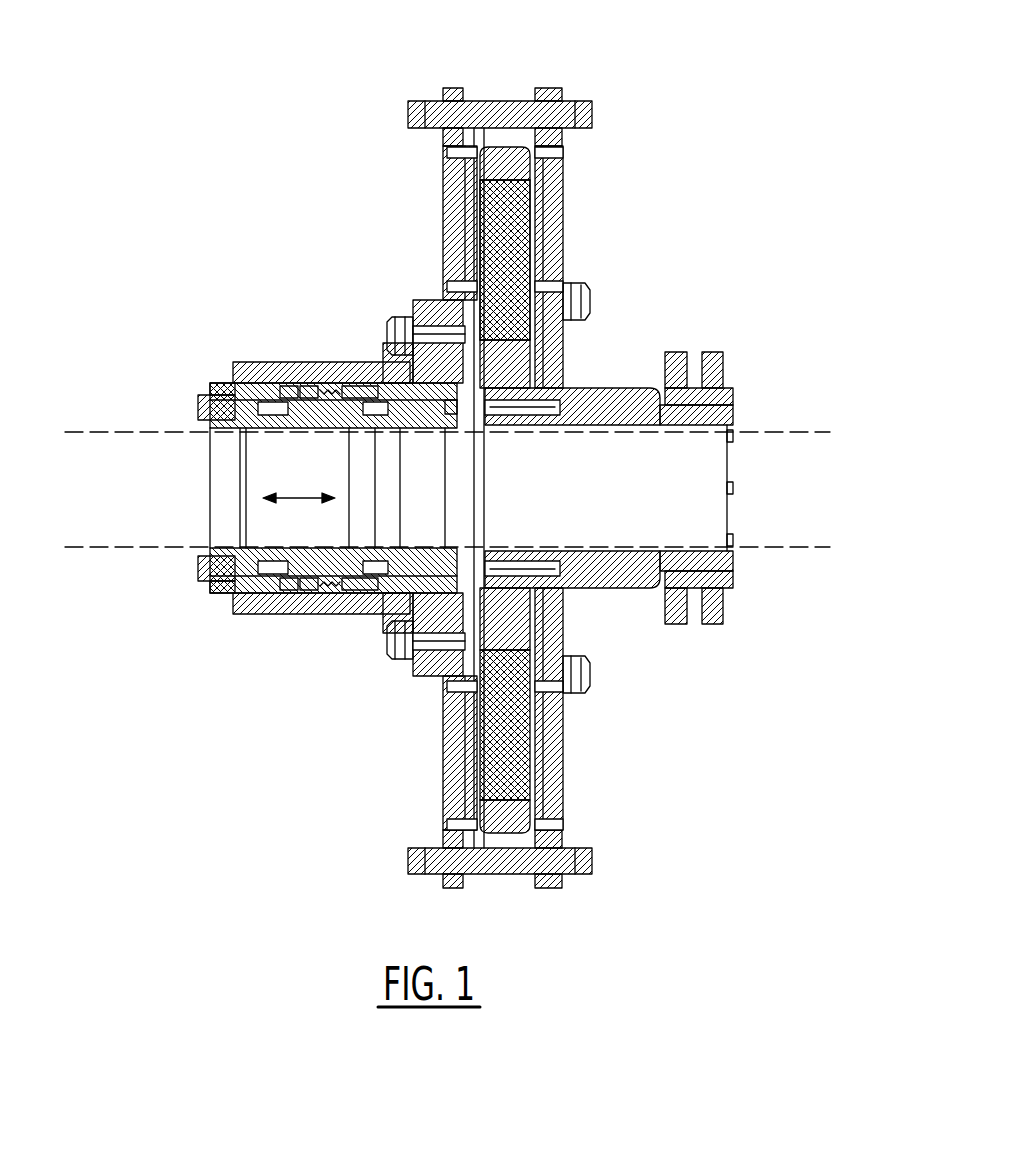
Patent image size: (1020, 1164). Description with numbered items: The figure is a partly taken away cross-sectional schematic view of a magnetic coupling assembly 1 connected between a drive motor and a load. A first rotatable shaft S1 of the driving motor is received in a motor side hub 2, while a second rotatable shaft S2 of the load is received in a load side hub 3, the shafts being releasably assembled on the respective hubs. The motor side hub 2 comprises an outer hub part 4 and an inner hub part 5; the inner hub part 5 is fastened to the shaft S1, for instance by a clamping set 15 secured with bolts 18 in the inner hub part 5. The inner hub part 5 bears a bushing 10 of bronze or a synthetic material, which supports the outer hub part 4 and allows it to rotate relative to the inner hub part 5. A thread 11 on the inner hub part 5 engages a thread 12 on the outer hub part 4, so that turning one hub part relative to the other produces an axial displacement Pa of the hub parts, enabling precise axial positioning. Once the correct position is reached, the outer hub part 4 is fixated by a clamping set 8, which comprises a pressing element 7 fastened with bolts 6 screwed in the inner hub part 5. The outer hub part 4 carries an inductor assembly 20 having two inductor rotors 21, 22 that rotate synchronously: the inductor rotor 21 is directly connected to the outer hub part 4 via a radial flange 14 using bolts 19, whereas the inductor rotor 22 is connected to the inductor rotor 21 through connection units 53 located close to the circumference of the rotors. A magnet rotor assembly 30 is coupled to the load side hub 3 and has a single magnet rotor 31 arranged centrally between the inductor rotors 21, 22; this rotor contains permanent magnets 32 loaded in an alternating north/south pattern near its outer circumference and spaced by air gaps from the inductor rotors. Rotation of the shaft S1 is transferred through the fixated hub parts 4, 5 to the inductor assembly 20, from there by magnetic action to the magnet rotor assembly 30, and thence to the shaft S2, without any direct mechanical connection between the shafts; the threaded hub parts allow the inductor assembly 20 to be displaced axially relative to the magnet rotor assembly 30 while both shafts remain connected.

The magnetic coupling assembly 1 is at (447, 448).
The motor side hub 2 is at (295, 515).
The load side hub 3 is at (656, 354).
The outer hub part 4 is at (305, 385).
The inner hub part 5 is at (290, 385).
The bolts 6 is at (200, 402).
The pressing element 7 is at (228, 392).
The clamping set 8 is at (256, 370).
The bushing 10 is at (380, 375).
The thread 11 is at (325, 392).
The thread 12 is at (350, 388).
The radial flange 14 is at (430, 662).
The clamping set 15 is at (430, 533).
The bolts 18 is at (447, 410).
The bolts 19 is at (403, 640).
The inductor assembly 20 is at (515, 448).
The inductor rotor 21 is at (443, 212).
The inductor rotor 22 is at (553, 245).
The magnet rotor assembly 30 is at (530, 635).
The magnet rotor 31 is at (525, 813).
The permanent magnets 32 is at (530, 758).
The connection units 53 is at (515, 78).
The first rotatable shaft S1 is at (85, 548).
The second rotatable shaft S2 is at (778, 548).
The axial displacement Pa is at (299, 486).